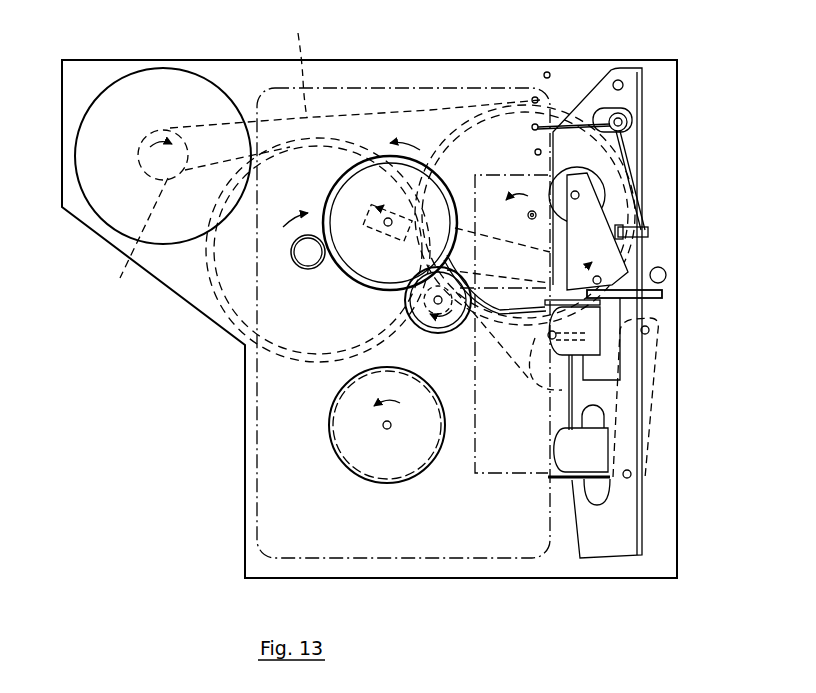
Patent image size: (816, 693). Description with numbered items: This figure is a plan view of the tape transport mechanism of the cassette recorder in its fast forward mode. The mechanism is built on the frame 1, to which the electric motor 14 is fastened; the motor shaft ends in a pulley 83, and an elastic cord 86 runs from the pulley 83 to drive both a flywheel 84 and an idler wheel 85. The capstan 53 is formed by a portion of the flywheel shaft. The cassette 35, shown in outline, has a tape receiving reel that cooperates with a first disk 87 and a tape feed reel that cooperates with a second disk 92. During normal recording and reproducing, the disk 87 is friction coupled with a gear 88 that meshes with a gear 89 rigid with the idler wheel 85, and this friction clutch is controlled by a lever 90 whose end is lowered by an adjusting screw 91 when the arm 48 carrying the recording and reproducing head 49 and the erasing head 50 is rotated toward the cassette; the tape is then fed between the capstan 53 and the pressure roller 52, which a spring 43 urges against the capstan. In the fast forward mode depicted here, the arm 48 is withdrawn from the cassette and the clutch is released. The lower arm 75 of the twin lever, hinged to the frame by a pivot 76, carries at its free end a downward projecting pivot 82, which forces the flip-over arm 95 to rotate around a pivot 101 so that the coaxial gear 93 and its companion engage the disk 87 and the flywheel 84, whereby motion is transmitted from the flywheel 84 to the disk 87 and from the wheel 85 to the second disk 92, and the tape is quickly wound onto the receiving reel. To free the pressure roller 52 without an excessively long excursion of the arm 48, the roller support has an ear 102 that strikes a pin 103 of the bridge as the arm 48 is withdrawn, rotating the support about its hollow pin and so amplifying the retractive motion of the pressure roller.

The frame 1 is at (652, 570).
The electric motor 14 is at (107, 192).
The cassette 35 is at (452, 558).
The spring 43 is at (626, 145).
The arm 48 is at (630, 102).
The recording and reproducing head 49 is at (599, 338).
The erasing head 50 is at (553, 448).
The pressure roller 52 is at (587, 313).
The capstan 53 is at (528, 215).
The lower arm 75 is at (643, 403).
The pivot 76 is at (640, 477).
The pivot 82 is at (655, 331).
The pulley 83 is at (322, 204).
The flywheel 84 is at (500, 130).
The idler wheel 85 is at (213, 300).
The elastic cord 86 is at (294, 65).
The first disk 87 is at (420, 158).
The gear 88 is at (381, 157).
The gear 89 is at (291, 252).
The lever 90 is at (505, 322).
The adjusting screw 91 is at (602, 267).
The second disk 92 is at (362, 452).
The gear 93 is at (440, 334).
The flip-over arm 95 is at (527, 375).
The pivot 101 is at (497, 316).
The ear 102 is at (651, 278).
The pin 103 is at (668, 272).